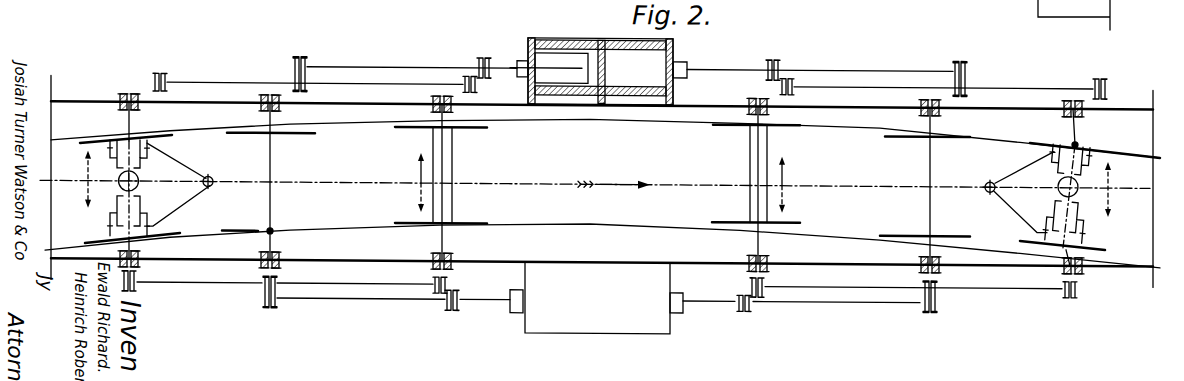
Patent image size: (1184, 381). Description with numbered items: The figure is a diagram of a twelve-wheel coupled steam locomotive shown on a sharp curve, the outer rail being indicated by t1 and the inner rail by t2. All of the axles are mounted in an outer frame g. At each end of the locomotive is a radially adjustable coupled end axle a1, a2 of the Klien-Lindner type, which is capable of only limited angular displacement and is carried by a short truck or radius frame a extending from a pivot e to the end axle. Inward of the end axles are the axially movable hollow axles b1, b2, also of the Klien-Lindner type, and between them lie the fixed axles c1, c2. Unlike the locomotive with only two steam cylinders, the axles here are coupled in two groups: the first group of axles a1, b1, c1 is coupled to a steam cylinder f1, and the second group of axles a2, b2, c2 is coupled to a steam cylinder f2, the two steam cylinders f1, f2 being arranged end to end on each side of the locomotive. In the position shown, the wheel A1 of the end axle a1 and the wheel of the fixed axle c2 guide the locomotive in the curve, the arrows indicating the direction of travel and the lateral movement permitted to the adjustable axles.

The outer frame g is at (85, 99).
The truck a is at (176, 161).
The end axle a1 is at (1087, 222).
The end axle a2 is at (132, 214).
The wheel A1 is at (1100, 140).
The pivot e is at (215, 178).
The fixed axle c2 is at (273, 170).
The fixed axle c1 is at (930, 191).
The hollow axle b2 is at (452, 165).
The hollow axle b1 is at (750, 150).
The outer rail t1 is at (380, 124).
The inner rail t2 is at (371, 221).
The steam cylinder f2 is at (547, 46).
The steam cylinder f1 is at (638, 63).